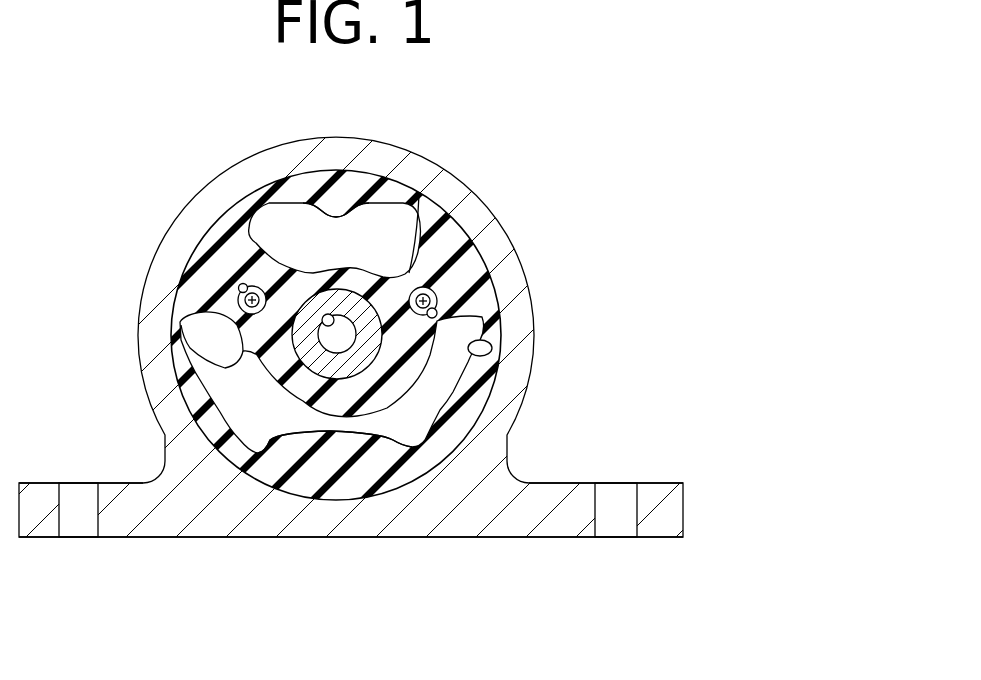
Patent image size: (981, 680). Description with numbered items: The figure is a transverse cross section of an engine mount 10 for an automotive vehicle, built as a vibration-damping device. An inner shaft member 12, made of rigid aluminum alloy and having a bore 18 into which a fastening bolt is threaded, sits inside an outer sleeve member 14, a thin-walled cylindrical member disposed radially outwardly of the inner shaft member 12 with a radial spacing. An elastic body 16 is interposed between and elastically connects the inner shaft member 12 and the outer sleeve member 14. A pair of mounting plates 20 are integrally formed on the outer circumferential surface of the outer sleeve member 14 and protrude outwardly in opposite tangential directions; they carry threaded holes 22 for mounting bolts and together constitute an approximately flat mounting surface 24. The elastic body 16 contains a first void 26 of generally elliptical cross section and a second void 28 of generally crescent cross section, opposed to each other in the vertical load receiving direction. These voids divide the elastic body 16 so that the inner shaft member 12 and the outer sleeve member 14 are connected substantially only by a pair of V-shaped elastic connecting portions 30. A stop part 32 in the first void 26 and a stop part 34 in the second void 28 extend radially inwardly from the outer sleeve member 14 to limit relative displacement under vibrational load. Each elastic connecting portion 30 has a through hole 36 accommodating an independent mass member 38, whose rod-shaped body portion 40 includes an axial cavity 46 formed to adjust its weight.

The engine mount 10 is at (606, 147).
The inner shaft member 12 is at (356, 287).
The outer sleeve member 14 is at (512, 261).
The elastic body 16 is at (468, 216).
The bore 18 is at (327, 318).
The mounting plates 20 is at (113, 482).
The threaded holes 22 is at (62, 500).
The mounting surface 24 is at (440, 540).
The first void 26 is at (248, 233).
The second void 28 is at (493, 348).
The elastic connecting portions 30 is at (421, 198).
The stop part 32 is at (343, 205).
The stop part 34 is at (340, 440).
The through holes 36 is at (238, 294).
The independent mass members 38 is at (238, 303).
The body portion 40 is at (338, 301).
The cavity 46 is at (243, 337).